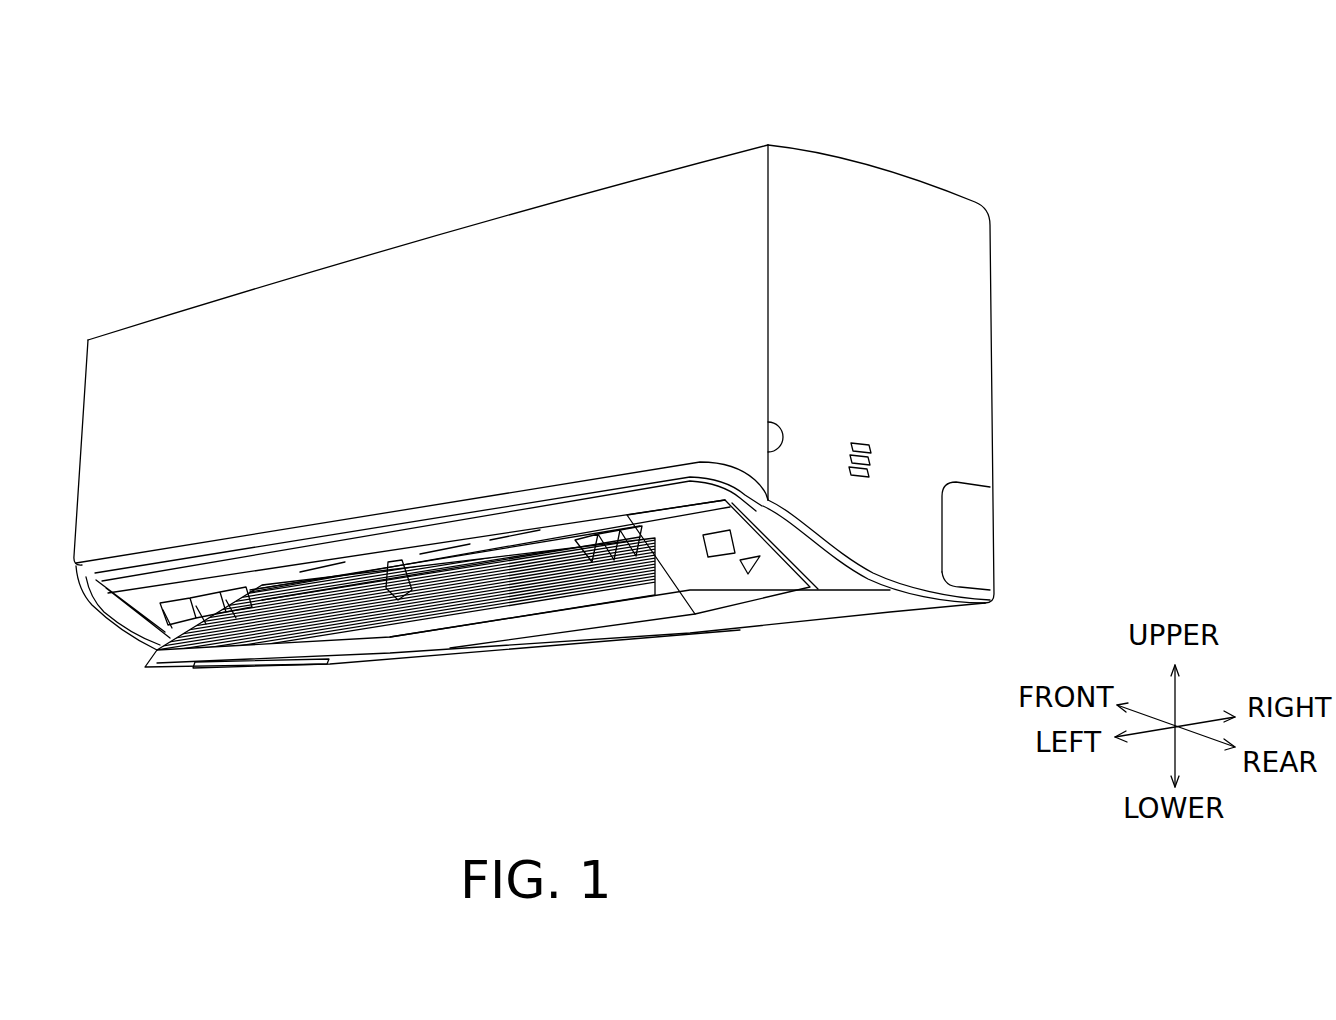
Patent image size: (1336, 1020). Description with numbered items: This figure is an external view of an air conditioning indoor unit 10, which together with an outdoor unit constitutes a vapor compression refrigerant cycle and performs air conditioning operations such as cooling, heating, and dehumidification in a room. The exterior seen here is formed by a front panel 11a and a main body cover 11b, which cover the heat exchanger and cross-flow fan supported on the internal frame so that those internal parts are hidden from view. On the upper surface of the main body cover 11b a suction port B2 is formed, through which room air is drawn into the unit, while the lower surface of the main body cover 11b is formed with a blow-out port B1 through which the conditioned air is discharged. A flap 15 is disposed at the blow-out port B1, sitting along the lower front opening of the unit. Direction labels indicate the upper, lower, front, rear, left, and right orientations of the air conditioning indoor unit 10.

The air conditioning indoor unit 10 is at (550, 398).
The front panel 11a is at (192, 345).
The main body cover 11b is at (960, 318).
The flap 15 is at (682, 602).
The blow-out port B1 is at (330, 640).
The suction port B2 is at (412, 205).